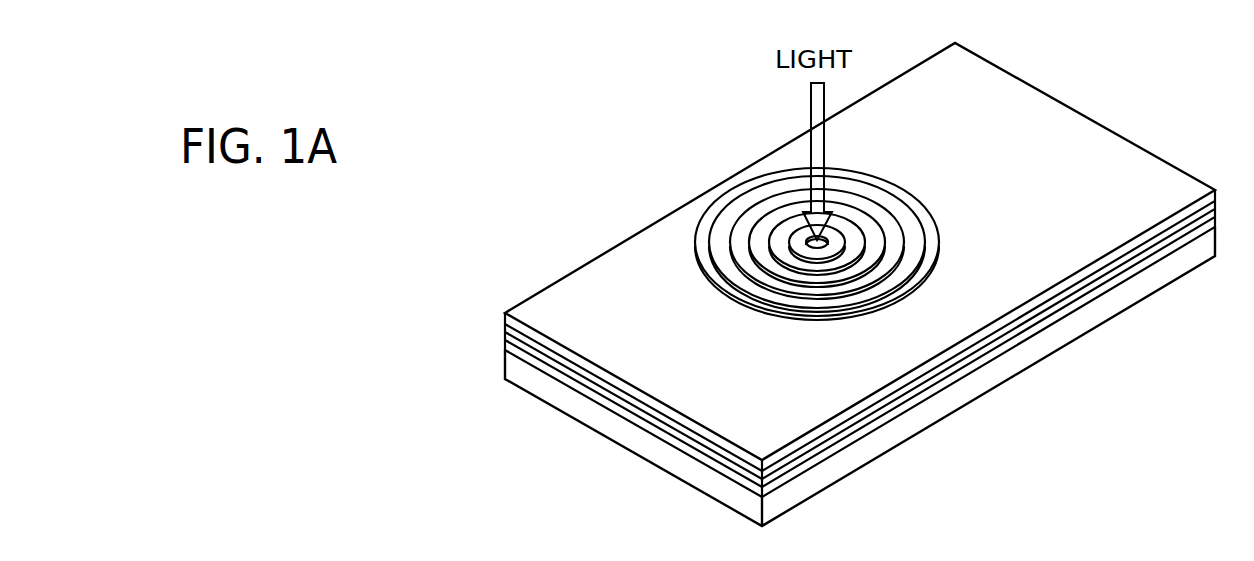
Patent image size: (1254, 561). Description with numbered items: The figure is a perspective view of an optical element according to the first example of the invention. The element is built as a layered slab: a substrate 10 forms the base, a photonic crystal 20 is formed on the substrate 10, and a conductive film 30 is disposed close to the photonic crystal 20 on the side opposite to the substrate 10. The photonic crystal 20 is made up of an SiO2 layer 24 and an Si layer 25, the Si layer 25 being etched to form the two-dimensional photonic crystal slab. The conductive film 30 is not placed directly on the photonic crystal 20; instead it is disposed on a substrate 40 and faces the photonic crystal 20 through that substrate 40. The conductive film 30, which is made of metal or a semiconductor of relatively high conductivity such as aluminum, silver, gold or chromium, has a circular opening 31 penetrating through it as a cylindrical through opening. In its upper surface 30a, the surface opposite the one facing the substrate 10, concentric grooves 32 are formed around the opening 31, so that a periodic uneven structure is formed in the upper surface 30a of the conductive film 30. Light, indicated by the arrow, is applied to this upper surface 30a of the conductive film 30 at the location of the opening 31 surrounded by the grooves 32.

The substrate 10 is at (690, 473).
The photonic crystal 20 is at (843, 356).
The SiO2 layer 24 is at (645, 430).
The Si layer 25 is at (627, 410).
The conductive film 30 is at (1015, 318).
The upper surface 30a is at (1073, 132).
The circular opening 31 is at (780, 240).
The grooves 32 is at (752, 232).
The substrate 40 is at (968, 356).